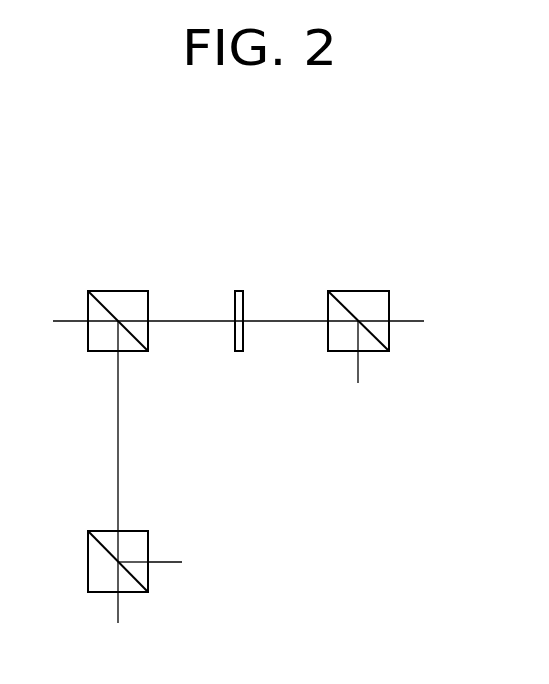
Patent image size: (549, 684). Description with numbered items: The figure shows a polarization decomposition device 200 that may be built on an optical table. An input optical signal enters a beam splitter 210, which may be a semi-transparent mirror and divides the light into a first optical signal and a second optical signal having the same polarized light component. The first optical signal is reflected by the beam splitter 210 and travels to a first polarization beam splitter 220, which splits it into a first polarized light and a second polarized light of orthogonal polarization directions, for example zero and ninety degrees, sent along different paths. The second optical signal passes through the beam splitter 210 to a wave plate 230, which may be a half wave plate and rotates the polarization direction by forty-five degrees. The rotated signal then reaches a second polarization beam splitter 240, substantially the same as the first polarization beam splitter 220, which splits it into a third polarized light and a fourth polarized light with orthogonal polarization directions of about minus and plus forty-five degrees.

The polarization decomposition device 200 is at (483, 182).
The beam splitter 210 is at (118, 291).
The first polarization beam splitter 220 is at (132, 531).
The wave plate 230 is at (238, 291).
The second polarization beam splitter 240 is at (358, 291).